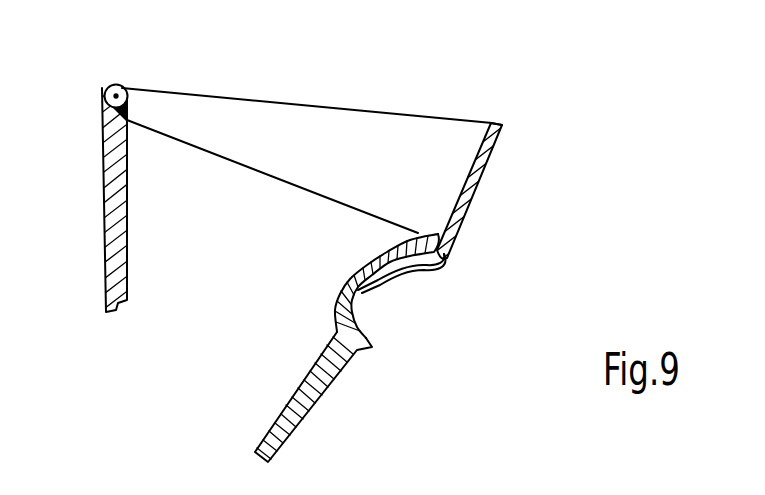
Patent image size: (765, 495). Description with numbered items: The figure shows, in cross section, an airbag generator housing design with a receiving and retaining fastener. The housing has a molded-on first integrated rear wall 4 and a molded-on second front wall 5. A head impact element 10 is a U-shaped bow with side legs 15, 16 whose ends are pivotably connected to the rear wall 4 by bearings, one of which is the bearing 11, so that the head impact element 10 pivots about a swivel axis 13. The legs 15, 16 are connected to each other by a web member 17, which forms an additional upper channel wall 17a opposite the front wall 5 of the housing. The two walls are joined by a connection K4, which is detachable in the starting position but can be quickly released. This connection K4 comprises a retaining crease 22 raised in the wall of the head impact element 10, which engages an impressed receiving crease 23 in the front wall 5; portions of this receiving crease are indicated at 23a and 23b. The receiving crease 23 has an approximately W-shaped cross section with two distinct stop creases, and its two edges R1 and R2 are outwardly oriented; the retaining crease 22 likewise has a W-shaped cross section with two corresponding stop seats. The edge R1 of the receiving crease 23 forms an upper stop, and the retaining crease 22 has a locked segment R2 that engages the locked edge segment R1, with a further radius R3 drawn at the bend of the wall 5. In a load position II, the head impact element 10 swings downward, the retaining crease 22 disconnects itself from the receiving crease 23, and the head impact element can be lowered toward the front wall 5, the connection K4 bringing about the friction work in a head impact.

The rear wall 4 is at (105, 257).
The front wall 5 is at (310, 400).
The head impact element 10 is at (357, 107).
The bearing 11 is at (105, 94).
The swivel axis 13 is at (120, 92).
The side leg 15 is at (468, 82).
The side leg 16 is at (428, 128).
The web member 17 is at (476, 201).
The upper channel wall 17a is at (502, 130).
The retaining crease 22 is at (391, 288).
The receiving crease 23 is at (347, 276).
The hook bend 23a is at (332, 296).
The hook leg 23b is at (383, 238).
The edge of the receiving crease R1 is at (421, 231).
The locked segment R2 is at (433, 276).
The radius R3 is at (337, 330).
The connection K4 is at (428, 323).
The load position II is at (305, 318).